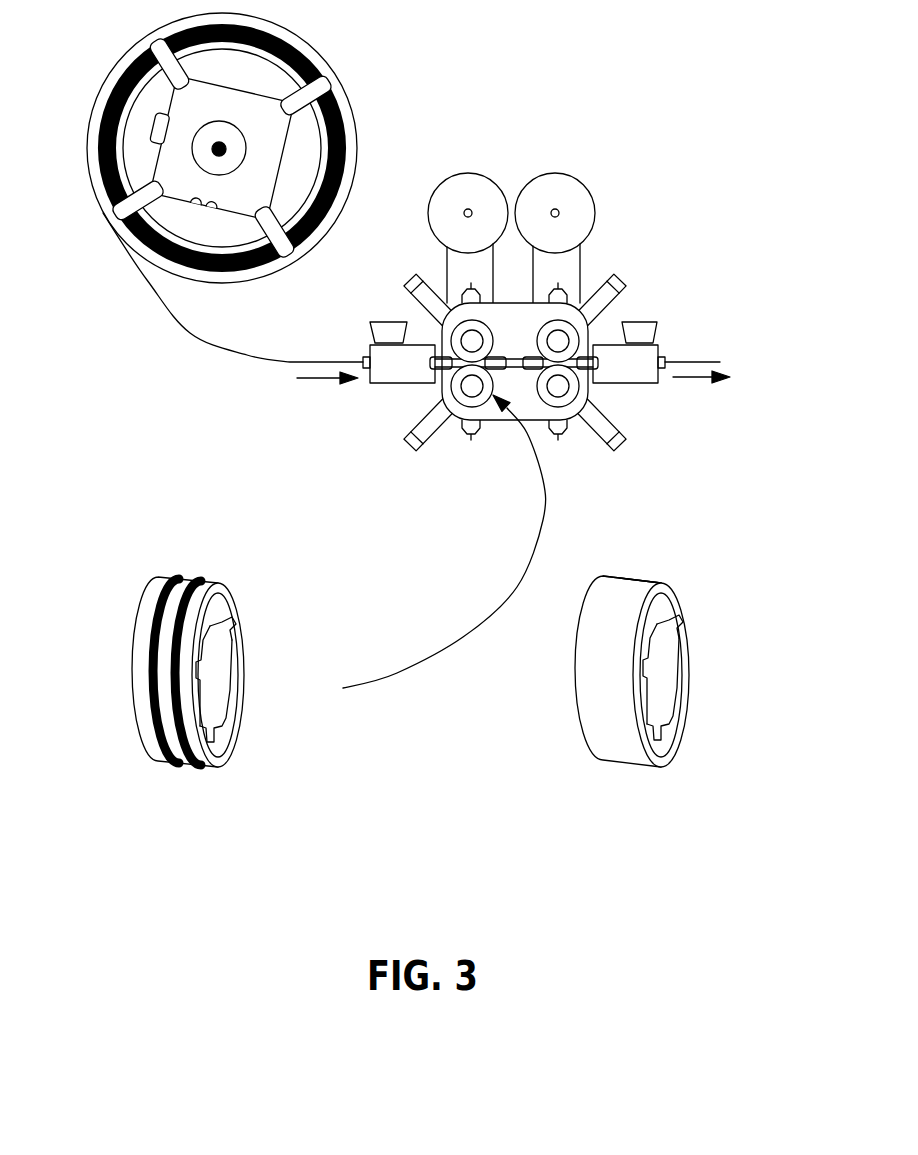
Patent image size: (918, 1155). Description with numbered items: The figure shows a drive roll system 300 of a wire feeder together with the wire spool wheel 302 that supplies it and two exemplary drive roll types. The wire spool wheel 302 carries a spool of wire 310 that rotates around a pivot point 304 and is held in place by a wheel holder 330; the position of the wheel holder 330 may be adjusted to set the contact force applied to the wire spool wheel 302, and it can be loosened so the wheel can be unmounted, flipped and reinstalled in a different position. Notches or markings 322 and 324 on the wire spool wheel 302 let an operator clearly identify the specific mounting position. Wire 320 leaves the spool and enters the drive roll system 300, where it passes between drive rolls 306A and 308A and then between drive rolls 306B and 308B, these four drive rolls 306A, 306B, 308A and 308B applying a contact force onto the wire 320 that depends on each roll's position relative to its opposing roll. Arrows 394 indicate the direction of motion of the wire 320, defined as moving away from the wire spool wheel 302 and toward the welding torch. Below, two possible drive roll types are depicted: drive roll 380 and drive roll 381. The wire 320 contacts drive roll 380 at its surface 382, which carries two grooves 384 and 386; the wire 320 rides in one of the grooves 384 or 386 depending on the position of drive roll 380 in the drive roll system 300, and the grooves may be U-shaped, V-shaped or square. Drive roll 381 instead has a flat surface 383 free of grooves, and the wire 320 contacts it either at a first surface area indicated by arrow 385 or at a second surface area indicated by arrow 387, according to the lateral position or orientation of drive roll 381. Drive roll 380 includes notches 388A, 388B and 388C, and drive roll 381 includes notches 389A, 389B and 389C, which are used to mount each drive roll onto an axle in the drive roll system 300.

The drive roll system 300 is at (522, 132).
The wire spool wheel 302 is at (320, 60).
The pivot point 304 is at (226, 134).
The drive roll 306A is at (440, 335).
The drive roll 306B is at (590, 335).
The drive roll 308A is at (440, 390).
The drive roll 308B is at (594, 390).
The spool of wire 310 is at (138, 57).
The wire 320 is at (177, 323).
The notches or markings 322 is at (157, 134).
The notches or markings 324 is at (205, 218).
The wheel holder 330 is at (219, 140).
The drive roll 380 is at (113, 668).
The drive roll 381 is at (551, 668).
The surface 382 is at (141, 608).
The flat surface 383 is at (605, 606).
The groove 384 is at (184, 588).
The arrow indicating first surface area 385 is at (636, 563).
The groove 386 is at (203, 588).
The arrow indicating second surface area 387 is at (657, 568).
The notch 388A is at (255, 627).
The notch 388B is at (220, 676).
The notch 388C is at (230, 736).
The notch 389A is at (707, 618).
The notch 389B is at (670, 678).
The notch 389C is at (684, 738).
The arrows 394 is at (306, 385).